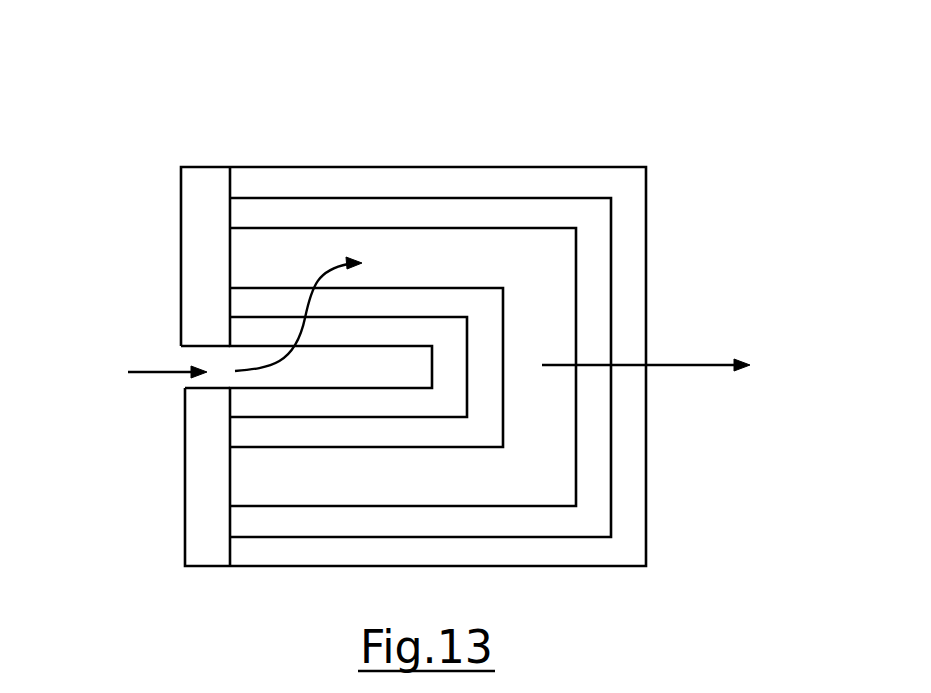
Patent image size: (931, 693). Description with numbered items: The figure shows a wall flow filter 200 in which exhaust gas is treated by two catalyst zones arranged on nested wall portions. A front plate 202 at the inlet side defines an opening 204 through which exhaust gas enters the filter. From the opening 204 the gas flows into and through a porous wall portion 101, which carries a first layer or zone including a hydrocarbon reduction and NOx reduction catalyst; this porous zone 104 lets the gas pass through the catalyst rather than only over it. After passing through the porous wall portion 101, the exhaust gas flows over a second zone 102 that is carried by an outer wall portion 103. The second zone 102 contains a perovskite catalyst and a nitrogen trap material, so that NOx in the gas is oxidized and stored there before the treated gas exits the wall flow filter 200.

The wall flow filter 200 is at (718, 170).
The front plate 202 is at (197, 240).
The opening 204 is at (207, 347).
The porous wall portion 101 is at (288, 296).
The second zone 102 is at (439, 213).
The outer wall portion 103 is at (621, 184).
The second layer or zone 104 is at (257, 326).